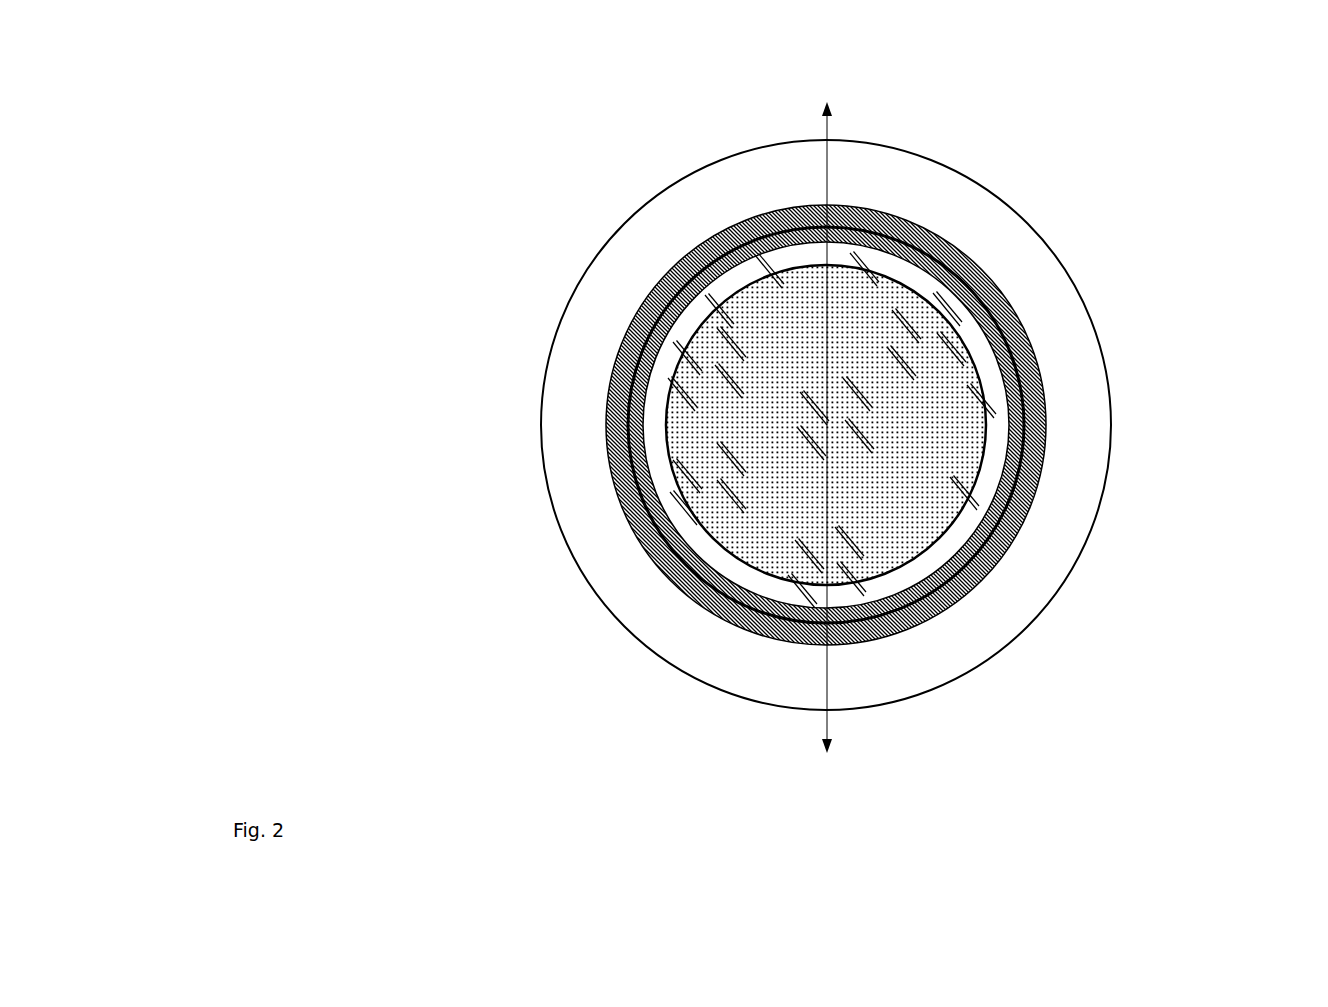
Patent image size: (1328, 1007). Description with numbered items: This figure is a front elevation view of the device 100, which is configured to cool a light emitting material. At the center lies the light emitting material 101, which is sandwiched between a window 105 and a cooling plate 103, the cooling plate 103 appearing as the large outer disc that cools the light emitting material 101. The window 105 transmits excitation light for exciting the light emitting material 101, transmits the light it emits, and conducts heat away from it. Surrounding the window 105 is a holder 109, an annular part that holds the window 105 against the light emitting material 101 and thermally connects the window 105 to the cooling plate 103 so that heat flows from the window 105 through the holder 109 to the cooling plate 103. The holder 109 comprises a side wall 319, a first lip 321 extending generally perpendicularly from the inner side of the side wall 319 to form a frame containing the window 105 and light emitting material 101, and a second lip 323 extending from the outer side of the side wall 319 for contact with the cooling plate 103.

The device 100 is at (830, 425).
The light emitting material 101 is at (813, 338).
The cooling plate 103 is at (758, 198).
The window 105 is at (655, 412).
The holder 109 is at (628, 327).
The side wall 319 is at (917, 222).
The first lip 321 is at (1045, 387).
The second lip 323 is at (967, 253).